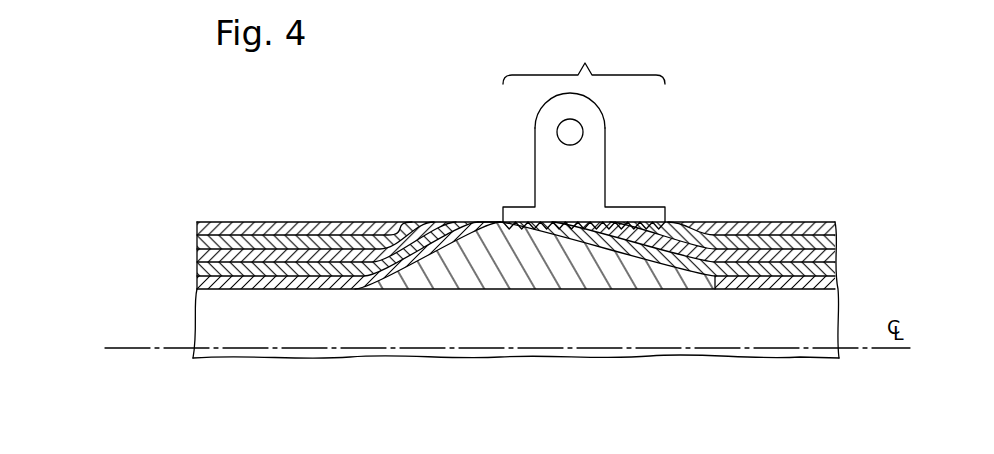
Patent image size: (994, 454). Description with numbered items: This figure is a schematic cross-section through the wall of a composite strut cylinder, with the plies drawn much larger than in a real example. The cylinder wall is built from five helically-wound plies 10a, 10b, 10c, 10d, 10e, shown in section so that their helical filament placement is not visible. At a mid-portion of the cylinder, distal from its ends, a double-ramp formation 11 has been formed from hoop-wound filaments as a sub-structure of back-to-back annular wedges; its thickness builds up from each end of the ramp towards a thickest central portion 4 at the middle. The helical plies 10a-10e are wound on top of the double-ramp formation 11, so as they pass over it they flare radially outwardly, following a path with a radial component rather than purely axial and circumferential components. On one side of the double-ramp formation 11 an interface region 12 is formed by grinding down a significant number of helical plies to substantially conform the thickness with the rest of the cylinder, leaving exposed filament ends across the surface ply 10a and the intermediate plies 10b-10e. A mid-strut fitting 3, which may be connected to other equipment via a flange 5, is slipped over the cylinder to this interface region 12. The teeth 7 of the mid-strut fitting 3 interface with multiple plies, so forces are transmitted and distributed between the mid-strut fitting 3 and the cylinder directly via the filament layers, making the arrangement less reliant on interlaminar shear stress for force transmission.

The mid-strut fitting 3 is at (648, 193).
The thickest central portion 4 is at (487, 226).
The flange 5 is at (590, 172).
The teeth 7 is at (632, 228).
The surface layer ply 10a is at (232, 228).
The intermediate ply 10b is at (197, 242).
The intermediate ply 10c is at (197, 253).
The intermediate ply 10d is at (197, 270).
The intermediate ply 10e is at (197, 282).
The double-ramp formation 11 is at (503, 267).
The interface region 12 is at (584, 60).